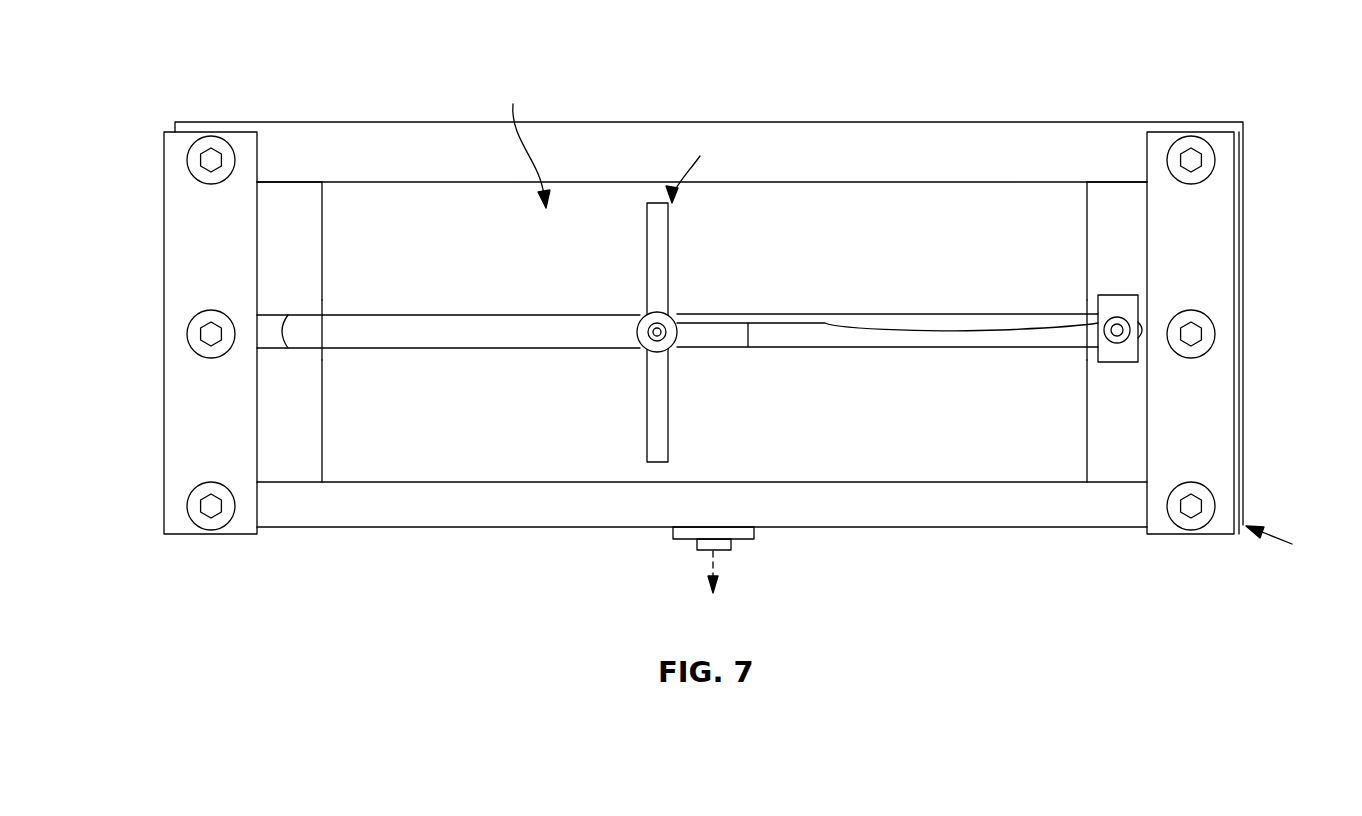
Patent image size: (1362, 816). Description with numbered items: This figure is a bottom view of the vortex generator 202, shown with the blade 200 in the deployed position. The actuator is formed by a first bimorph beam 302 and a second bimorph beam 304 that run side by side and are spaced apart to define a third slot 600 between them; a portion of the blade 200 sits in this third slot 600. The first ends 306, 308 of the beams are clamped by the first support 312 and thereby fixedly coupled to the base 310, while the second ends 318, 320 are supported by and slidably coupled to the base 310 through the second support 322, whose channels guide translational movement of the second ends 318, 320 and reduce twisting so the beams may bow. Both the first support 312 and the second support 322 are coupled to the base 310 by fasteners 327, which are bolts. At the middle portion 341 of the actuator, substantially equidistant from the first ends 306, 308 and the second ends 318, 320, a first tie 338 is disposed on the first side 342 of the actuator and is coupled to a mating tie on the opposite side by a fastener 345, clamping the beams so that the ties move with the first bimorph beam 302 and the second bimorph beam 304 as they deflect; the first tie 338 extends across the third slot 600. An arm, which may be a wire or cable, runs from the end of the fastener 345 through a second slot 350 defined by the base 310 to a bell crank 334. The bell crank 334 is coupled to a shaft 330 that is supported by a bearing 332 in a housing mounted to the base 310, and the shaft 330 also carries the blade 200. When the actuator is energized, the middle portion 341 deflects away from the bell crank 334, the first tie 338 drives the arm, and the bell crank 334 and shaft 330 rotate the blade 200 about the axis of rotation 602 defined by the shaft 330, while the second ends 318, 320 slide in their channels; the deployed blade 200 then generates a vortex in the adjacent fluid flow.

The blade 200 is at (955, 323).
The vortex generator 202 is at (1296, 545).
The first bimorph beam 302 is at (446, 200).
The second bimorph beam 304 is at (962, 430).
The first end of first bimorph beam 306 is at (271, 259).
The first end of second bimorph beam 308 is at (271, 442).
The base 310 is at (312, 130).
The first support 312 is at (179, 288).
The second end of first bimorph beam 318 is at (1120, 245).
The second end of second bimorph beam 320 is at (1120, 438).
The second support 322 is at (1220, 264).
The fasteners 327 is at (209, 162).
The shaft 330 is at (732, 545).
The bearing 332 is at (672, 531).
The bell crank 334 is at (710, 340).
The first tie 338 is at (652, 270).
The middle portion of the bimorph actuator 341 is at (691, 166).
The first side of the bimorph actuator 342 is at (520, 142).
The fastener 345 is at (670, 330).
The second slot 350 is at (374, 330).
The third slot 600 is at (568, 340).
The axis of rotation 602 is at (710, 565).